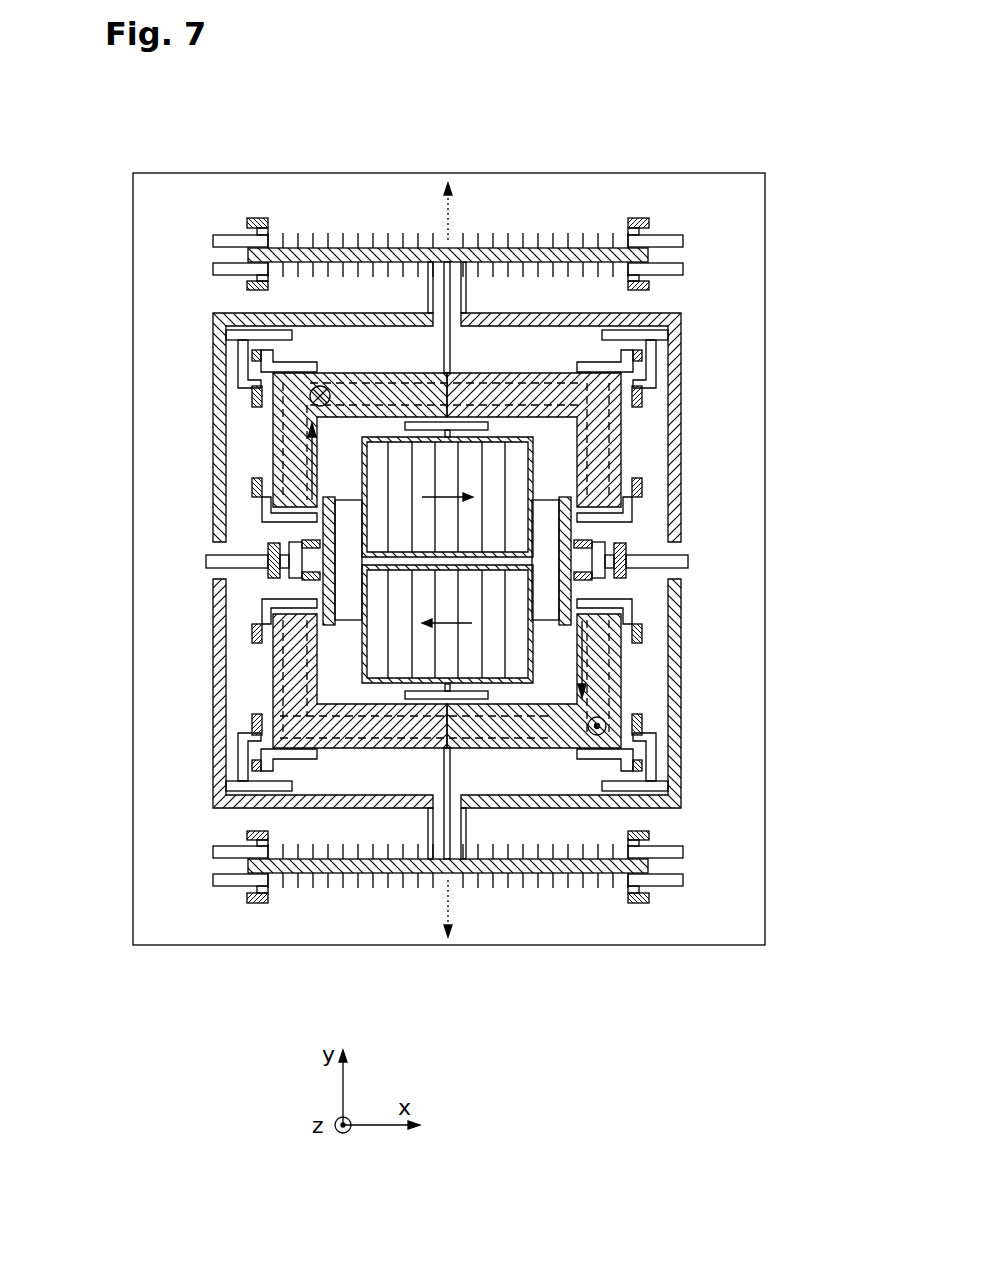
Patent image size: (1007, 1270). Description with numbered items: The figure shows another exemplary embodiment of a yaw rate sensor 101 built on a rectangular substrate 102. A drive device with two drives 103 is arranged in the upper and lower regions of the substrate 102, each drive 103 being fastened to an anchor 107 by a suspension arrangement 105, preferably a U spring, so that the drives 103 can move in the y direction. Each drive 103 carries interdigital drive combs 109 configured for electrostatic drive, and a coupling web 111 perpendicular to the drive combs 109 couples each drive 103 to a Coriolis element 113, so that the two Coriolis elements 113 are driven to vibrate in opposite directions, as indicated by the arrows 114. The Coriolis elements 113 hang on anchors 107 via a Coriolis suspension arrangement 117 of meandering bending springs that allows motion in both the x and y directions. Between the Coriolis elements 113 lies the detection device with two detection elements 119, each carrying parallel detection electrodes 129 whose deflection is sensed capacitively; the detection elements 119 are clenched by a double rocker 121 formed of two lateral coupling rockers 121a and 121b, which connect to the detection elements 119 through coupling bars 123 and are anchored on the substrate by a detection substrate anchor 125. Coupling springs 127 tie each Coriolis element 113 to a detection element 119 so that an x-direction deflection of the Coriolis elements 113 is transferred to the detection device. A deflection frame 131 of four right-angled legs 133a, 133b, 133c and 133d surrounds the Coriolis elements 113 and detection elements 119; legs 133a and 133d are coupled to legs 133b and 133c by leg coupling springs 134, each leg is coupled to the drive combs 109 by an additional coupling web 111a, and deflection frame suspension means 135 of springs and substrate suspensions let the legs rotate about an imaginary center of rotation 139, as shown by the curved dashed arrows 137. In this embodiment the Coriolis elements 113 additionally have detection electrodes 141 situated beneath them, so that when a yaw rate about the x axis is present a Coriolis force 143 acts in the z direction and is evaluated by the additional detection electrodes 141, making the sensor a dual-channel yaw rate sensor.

The yaw rate sensor 101 is at (773, 130).
The substrate 102 is at (767, 185).
The drive 103 is at (214, 240).
The suspension arrangement 105 is at (252, 218).
The anchor 107 is at (247, 286).
The drive comb 109 is at (280, 247).
The coupling web 111 is at (483, 423).
The additional coupling web 111a is at (390, 437).
The Coriolis element 113 is at (347, 400).
The arrow 114 is at (426, 978).
The Coriolis suspension arrangement 117 is at (262, 356).
The detection element 119 is at (451, 298).
The double rocker 121 is at (568, 500).
The coupling rocker 121a is at (445, 628).
The coupling rocker 121b is at (626, 576).
The coupling bar 123 is at (362, 503).
The detection substrate anchor 125 is at (304, 588).
The coupling spring 127 is at (600, 318).
The detection electrode 129 is at (300, 745).
The deflection frame 131 is at (276, 415).
The leg 133a is at (605, 418).
The leg 133b is at (605, 700).
The leg 133c is at (290, 705).
The leg 133d is at (290, 462).
The leg coupling spring 134 is at (292, 576).
The deflection frame suspension means 135 is at (230, 335).
The arrow 137 is at (545, 375).
The center of rotation 139 is at (215, 318).
The additional detection electrode 141 is at (645, 377).
The Coriolis force 143 is at (321, 386).